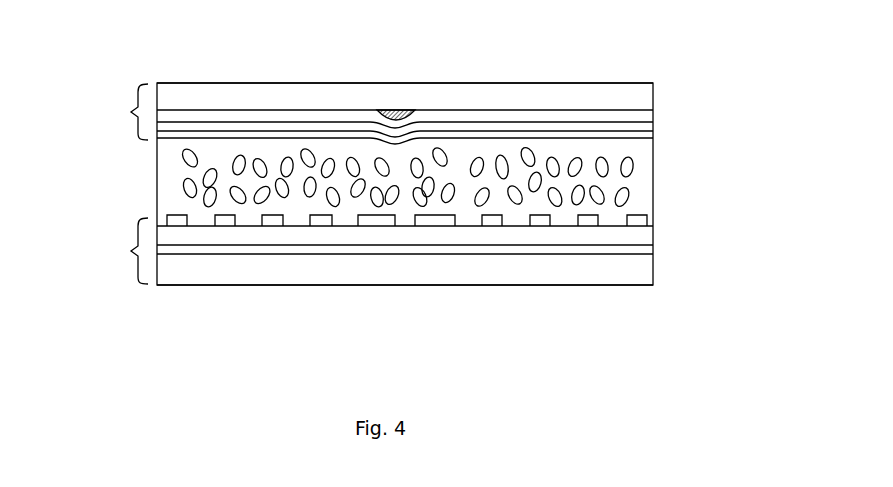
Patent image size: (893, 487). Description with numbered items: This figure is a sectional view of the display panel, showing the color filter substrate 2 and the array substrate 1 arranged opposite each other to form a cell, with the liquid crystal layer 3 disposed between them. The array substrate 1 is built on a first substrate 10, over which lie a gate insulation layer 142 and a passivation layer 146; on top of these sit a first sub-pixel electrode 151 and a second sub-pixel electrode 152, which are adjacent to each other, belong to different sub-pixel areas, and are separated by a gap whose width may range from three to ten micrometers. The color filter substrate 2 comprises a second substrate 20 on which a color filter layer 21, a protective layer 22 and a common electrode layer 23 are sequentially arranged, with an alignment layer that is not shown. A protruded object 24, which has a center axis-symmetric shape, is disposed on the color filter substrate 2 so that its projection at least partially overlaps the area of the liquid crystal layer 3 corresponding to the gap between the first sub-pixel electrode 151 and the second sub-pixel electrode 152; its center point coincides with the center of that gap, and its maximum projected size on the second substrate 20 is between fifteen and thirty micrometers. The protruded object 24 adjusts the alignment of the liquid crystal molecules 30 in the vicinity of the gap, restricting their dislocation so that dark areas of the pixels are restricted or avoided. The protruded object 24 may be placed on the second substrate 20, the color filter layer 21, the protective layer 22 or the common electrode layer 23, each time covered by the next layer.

The array substrate 1 is at (127, 251).
The color filter substrate 2 is at (127, 112).
The liquid crystal layer 3 is at (404, 176).
The first substrate 10 is at (640, 268).
The second substrate 20 is at (635, 90).
The color filter layer 21 is at (640, 110).
The protective layer 22 is at (650, 125).
The common electrode layer 23 is at (660, 139).
The protruded object 24 is at (393, 110).
The liquid crystal molecule 30 is at (183, 157).
The gate insulation layer 142 is at (655, 253).
The passivation layer 146 is at (658, 240).
The first sub-pixel electrode 151 is at (175, 213).
The second sub-pixel electrode 152 is at (640, 215).